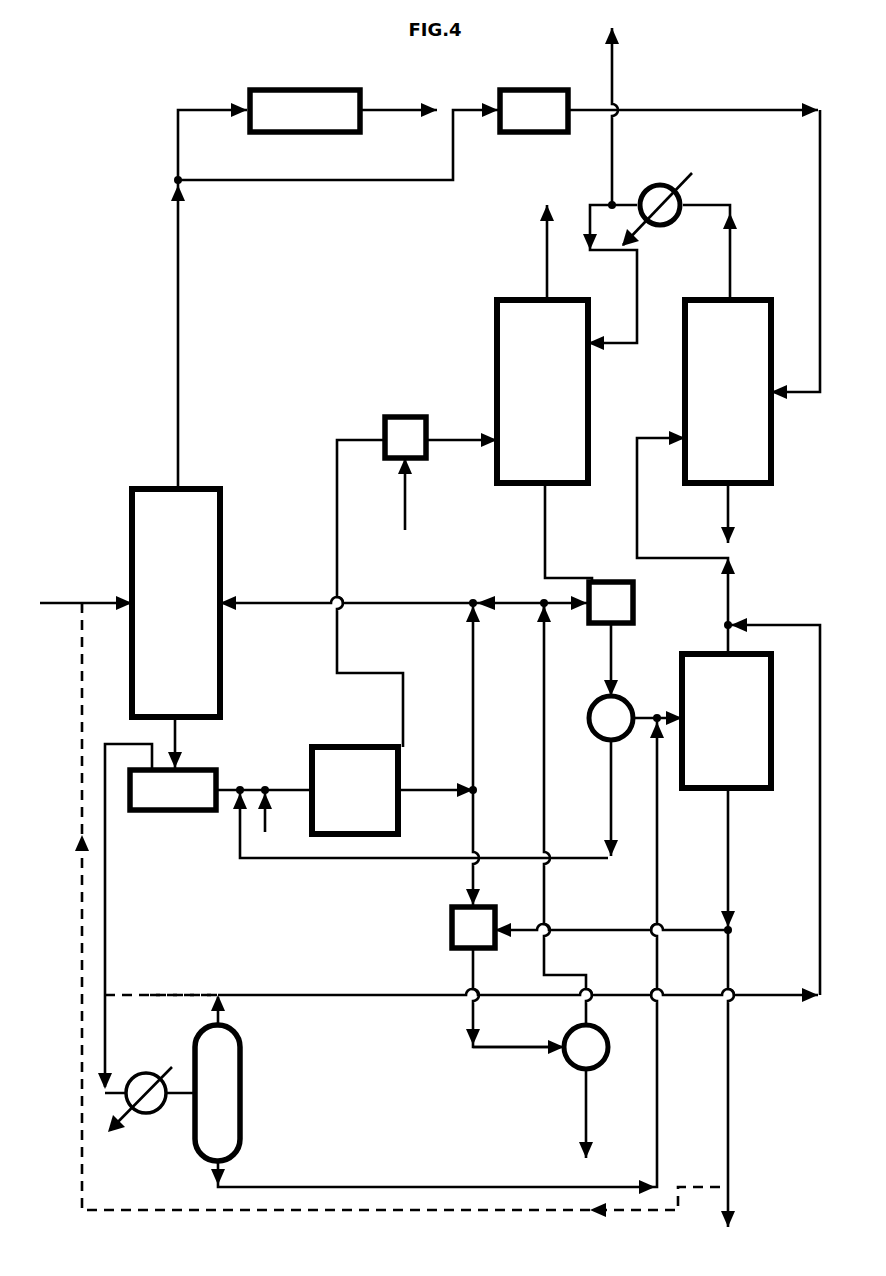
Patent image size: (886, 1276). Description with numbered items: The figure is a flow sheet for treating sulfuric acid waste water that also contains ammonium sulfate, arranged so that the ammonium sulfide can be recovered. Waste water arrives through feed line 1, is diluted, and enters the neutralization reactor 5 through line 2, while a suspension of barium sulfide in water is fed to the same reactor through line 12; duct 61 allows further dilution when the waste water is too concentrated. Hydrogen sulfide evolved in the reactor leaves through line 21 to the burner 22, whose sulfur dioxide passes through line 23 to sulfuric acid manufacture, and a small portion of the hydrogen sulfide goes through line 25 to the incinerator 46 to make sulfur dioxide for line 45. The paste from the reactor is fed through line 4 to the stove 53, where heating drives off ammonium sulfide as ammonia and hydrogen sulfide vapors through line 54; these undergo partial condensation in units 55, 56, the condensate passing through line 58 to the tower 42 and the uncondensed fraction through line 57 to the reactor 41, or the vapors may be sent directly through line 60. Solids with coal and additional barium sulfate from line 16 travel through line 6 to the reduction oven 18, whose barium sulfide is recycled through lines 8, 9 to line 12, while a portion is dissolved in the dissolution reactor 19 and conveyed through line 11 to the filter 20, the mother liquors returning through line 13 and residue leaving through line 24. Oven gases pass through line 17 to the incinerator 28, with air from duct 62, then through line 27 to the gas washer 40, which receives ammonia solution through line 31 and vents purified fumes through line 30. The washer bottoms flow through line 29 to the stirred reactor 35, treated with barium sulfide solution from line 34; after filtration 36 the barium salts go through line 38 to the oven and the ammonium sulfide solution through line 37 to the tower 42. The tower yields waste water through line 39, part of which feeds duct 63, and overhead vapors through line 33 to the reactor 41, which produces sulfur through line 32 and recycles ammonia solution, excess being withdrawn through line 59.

The feed line 1 is at (45, 603).
The line 2 is at (95, 603).
The bottoms line 4 is at (178, 738).
The neutralization reactor 5 is at (162, 487).
The line 6 is at (253, 790).
The line 8 is at (425, 790).
The line 9 is at (472, 713).
The line 11 is at (470, 1050).
The line 12 is at (277, 603).
The line 13 is at (543, 718).
The line 16 is at (268, 828).
The line 17 is at (335, 476).
The reduction oven 18 is at (343, 745).
The dissolution reactor 19 is at (450, 920).
The filter 20 is at (568, 1067).
The line 21 is at (175, 338).
The burner 22 is at (298, 88).
The line 23 is at (398, 110).
The line 24 is at (583, 1120).
The line 25 is at (362, 182).
The line 27 is at (448, 438).
The incinerator 28 is at (398, 415).
The line 29 is at (543, 523).
The line 30 is at (545, 243).
The line 31 is at (625, 203).
The line 32 is at (732, 512).
The line 33 is at (732, 592).
The line 34 is at (555, 607).
The stirred reactor 35 is at (592, 580).
The filtration 36 is at (592, 740).
The line 37 is at (618, 700).
The line 38 is at (611, 820).
The line 39 is at (732, 945).
The gas washer 40 is at (495, 340).
The reactor 41 is at (683, 383).
The tower 42 is at (762, 790).
The line 45 is at (720, 107).
The incinerator 46 is at (530, 88).
The stove 53 is at (180, 812).
The line 54 is at (107, 890).
The partial condensation unit 55 is at (147, 1115).
The partial condensation unit 56 is at (243, 1103).
The line 57 is at (818, 868).
The line 58 is at (660, 868).
The line 59 is at (618, 57).
The line 60 is at (153, 995).
The duct 61 is at (80, 945).
The duct 62 is at (410, 522).
The duct 63 is at (610, 925).